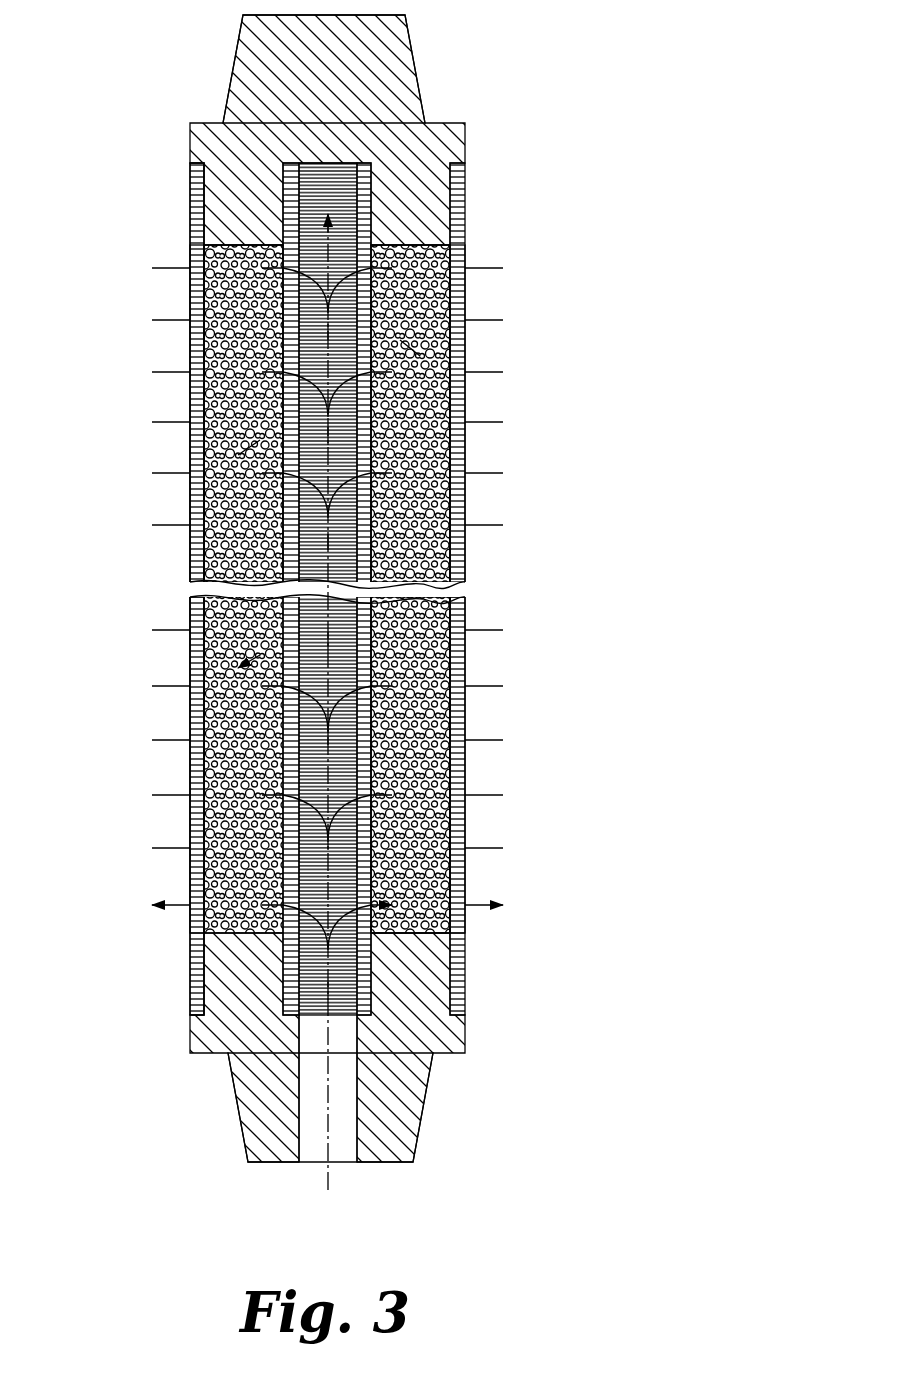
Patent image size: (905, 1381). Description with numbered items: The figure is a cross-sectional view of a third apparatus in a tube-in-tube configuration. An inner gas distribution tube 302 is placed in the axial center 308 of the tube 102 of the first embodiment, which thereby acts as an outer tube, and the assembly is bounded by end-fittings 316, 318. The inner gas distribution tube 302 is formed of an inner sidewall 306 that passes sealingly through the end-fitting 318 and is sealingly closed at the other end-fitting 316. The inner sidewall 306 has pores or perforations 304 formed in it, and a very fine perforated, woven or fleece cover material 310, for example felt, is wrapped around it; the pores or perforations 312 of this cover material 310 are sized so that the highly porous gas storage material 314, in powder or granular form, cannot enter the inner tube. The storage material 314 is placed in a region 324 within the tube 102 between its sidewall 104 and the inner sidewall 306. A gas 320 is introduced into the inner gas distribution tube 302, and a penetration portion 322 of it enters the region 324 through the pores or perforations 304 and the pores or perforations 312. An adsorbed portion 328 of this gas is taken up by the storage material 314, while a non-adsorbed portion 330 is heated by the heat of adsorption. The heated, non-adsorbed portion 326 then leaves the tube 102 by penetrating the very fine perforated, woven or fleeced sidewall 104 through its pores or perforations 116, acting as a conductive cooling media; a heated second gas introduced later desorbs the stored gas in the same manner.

The tube 102 is at (190, 228).
The sidewall 104 is at (190, 178).
The pores or perforations 116 is at (190, 305).
The inner gas distribution tube 302 is at (408, 1075).
The pores or perforations 304 is at (190, 825).
The inner sidewall 306 is at (465, 545).
The axial center 308 is at (371, 222).
The cover material 310 is at (190, 283).
The pores or perforations 312 is at (465, 720).
The highly porous gas storage material 314 is at (467, 870).
The end-fitting 316 is at (418, 88).
The end-fitting 318 is at (413, 1143).
The gas 320 is at (328, 1100).
The penetration portion 322 is at (190, 398).
The region 324 is at (190, 535).
The heated, non-adsorbed portion 326 is at (165, 266).
The adsorbed portion 328 is at (190, 495).
The non-adsorbed portion 330 is at (238, 455).